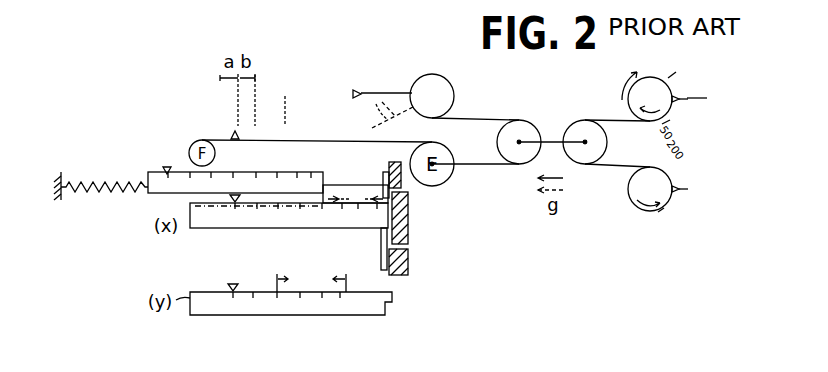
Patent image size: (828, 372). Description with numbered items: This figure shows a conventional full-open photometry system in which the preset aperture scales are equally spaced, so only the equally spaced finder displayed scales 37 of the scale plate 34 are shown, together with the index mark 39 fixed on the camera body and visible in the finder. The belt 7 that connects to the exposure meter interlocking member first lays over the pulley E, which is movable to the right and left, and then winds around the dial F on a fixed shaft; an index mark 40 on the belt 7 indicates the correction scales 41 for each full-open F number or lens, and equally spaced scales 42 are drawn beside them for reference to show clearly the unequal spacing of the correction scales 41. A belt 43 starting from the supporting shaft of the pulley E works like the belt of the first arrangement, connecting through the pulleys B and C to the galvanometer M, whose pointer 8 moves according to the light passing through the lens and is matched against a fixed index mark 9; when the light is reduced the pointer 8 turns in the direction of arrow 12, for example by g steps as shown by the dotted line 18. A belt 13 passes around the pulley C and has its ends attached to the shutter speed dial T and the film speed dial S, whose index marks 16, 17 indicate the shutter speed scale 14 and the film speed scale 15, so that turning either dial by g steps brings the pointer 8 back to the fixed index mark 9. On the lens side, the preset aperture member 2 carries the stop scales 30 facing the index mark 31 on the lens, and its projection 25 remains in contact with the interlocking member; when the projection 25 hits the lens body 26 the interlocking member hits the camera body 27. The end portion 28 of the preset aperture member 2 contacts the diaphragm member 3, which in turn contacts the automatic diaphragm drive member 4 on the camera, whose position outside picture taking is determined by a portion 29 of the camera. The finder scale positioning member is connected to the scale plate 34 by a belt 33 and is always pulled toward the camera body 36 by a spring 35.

The lens preset aperture member 2 is at (333, 229).
The diaphragm member 3 is at (383, 256).
The automatic diaphragm drive member 4 is at (379, 282).
The belt 7 is at (338, 140).
The pointer 8 is at (403, 92).
The fixed index mark 9 is at (355, 90).
The arrow 12 is at (392, 92).
The belt 13 is at (603, 119).
The shutter speed scale 14 is at (668, 56).
The film speed scale 15 is at (662, 226).
The index mark 16 is at (677, 97).
The index mark 17 is at (675, 182).
The dotted line 18 is at (394, 116).
The projection 25 is at (408, 208).
The lens body 26 is at (408, 238).
The camera body 27 is at (398, 163).
The end portion 28 is at (383, 228).
The portion of the camera 29 is at (410, 265).
The stop scales 30 is at (213, 229).
The index mark 31 is at (190, 204).
The belt 33 is at (360, 183).
The scale plate 34 is at (284, 172).
The spring 35 is at (88, 180).
The camera body 36 is at (59, 176).
The equally spaced aperture scales 37 is at (311, 173).
The index mark 39 is at (162, 170).
The index mark 40 is at (231, 136).
The correction scales 41 is at (289, 110).
The equally spaced scales 42 is at (288, 86).
The belt 43 is at (480, 118).